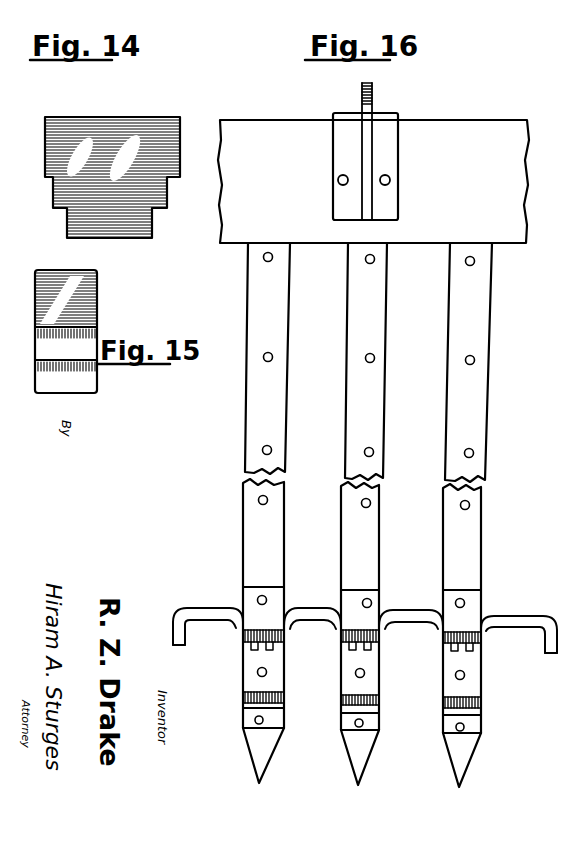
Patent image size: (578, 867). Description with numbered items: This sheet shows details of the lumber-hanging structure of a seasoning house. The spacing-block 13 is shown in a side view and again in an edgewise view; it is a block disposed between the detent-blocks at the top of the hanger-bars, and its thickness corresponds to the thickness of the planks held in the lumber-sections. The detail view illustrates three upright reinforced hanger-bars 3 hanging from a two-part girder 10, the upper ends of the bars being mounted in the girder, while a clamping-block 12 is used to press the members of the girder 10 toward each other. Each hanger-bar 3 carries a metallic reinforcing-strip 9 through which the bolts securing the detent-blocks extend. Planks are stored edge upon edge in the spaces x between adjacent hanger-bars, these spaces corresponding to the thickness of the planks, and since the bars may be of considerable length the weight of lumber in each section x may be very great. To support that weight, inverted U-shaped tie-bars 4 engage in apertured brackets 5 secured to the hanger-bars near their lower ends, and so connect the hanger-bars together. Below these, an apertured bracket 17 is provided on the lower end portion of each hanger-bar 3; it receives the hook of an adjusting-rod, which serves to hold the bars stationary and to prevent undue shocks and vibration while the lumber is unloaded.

In FIG. 14, the spacing-block 13 is at (103, 123).
In FIG. 15, the spacing-block 13 is at (90, 300).
In FIG. 16, the two-part girder 10 is at (465, 133).
In FIG. 16, the clamping-block 12 is at (382, 123).
In FIG. 16, the reinforced hanger-bar 3 is at (345, 383).
In FIG. 16, the metallic reinforcing-strip 9 is at (472, 402).
In FIG. 16, the space between hanger-bars x is at (425, 333).
In FIG. 16, the tie-bar 4 is at (210, 608).
In FIG. 16, the apertured bracket 5 is at (340, 632).
In FIG. 16, the apertured bracket 17 is at (340, 698).